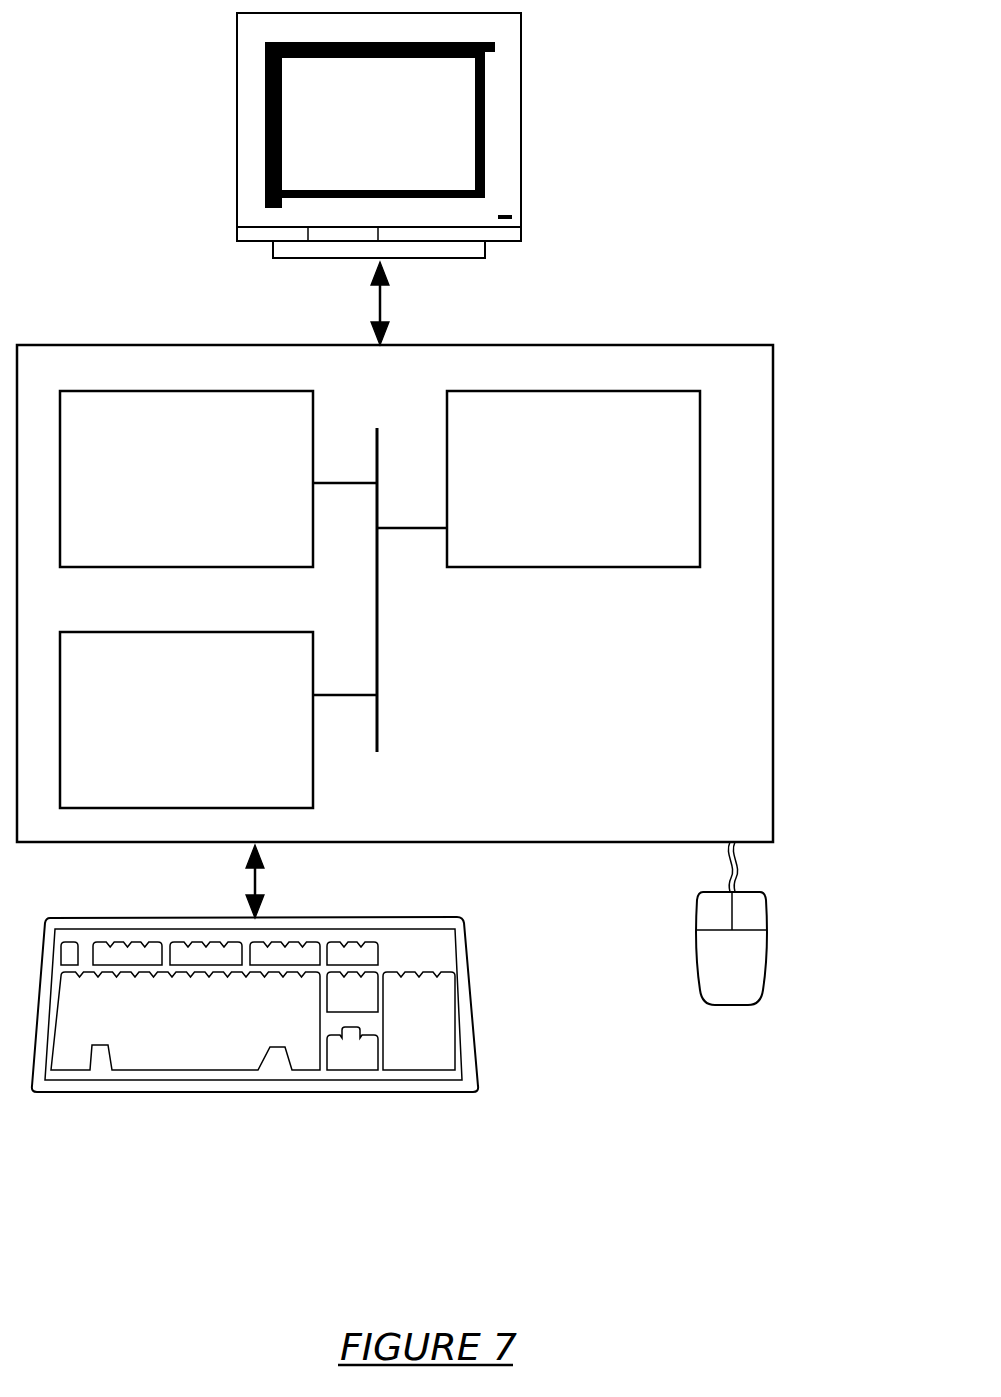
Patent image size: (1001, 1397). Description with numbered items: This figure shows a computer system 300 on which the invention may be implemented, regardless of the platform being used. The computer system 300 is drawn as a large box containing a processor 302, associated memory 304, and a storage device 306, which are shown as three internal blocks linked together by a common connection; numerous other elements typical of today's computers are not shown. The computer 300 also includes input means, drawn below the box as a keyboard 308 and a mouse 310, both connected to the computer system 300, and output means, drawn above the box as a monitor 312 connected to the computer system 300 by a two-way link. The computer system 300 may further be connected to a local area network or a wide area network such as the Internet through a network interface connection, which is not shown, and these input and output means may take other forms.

The computer system 300 is at (787, 190).
The processor 302 is at (570, 491).
The memory 304 is at (165, 491).
The storage device 306 is at (160, 736).
The keyboard 308 is at (154, 1046).
The mouse 310 is at (708, 972).
The monitor 312 is at (357, 141).